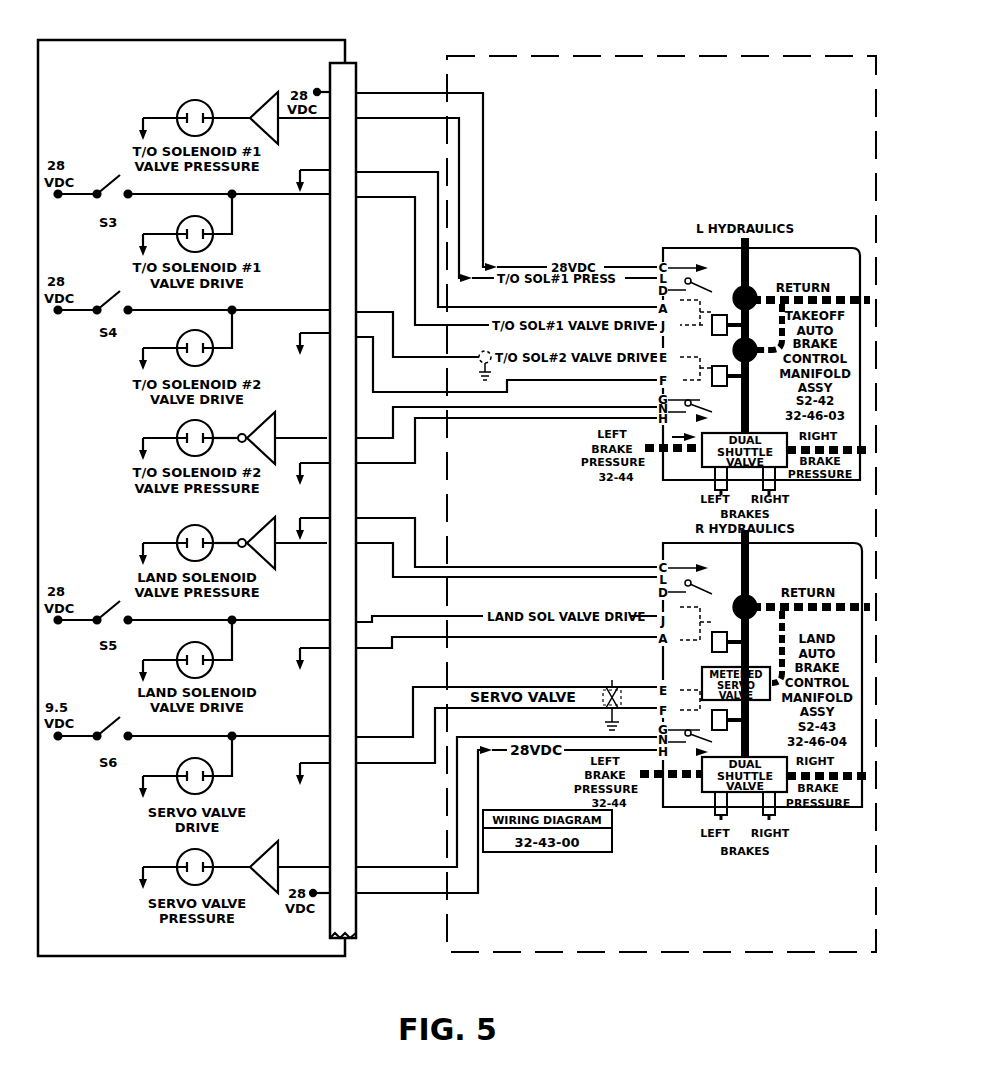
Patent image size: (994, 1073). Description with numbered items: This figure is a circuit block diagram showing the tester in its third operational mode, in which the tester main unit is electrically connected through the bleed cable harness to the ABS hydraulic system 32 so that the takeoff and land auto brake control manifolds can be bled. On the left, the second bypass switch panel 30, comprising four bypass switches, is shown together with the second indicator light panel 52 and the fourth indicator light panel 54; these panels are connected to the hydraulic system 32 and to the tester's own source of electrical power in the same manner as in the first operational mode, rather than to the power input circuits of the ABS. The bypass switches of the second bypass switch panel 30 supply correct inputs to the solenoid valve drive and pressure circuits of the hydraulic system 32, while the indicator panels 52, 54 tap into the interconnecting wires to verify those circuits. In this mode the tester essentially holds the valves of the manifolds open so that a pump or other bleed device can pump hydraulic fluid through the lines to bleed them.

The second bypass switch panel 30 is at (105, 177).
The ABS hydraulic system 32 is at (640, 56).
The second indicator light panel 52 is at (192, 331).
The fourth indicator light panel 54 is at (207, 102).